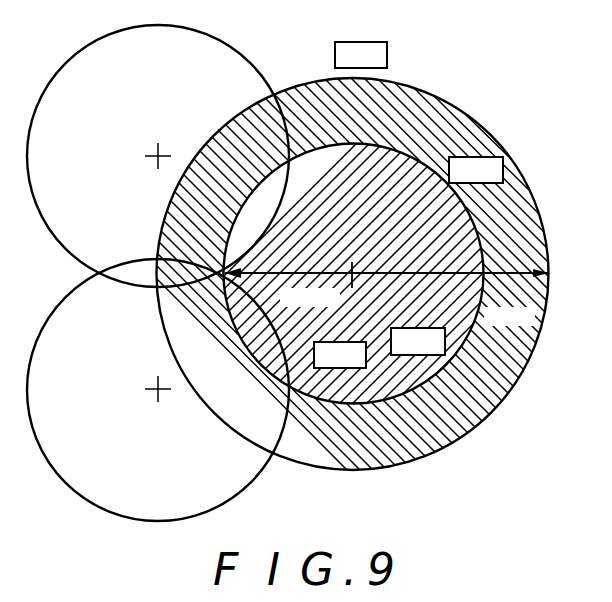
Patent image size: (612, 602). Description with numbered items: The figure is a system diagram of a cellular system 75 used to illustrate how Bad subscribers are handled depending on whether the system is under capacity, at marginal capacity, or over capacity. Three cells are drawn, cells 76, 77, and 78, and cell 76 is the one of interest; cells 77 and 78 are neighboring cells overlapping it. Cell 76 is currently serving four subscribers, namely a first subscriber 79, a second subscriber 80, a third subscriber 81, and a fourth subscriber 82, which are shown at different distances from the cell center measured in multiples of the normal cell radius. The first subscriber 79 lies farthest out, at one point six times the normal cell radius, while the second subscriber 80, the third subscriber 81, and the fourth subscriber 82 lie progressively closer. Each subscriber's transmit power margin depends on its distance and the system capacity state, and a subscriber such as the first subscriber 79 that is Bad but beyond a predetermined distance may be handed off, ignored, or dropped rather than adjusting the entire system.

The cellular system 75 is at (451, 104).
The cell 76 is at (352, 398).
The cell 77 is at (59, 243).
The cell 78 is at (241, 500).
The subscriber S1 79 is at (387, 48).
The subscriber S2 80 is at (503, 163).
The subscriber S3 81 is at (445, 355).
The subscriber S4 82 is at (360, 368).